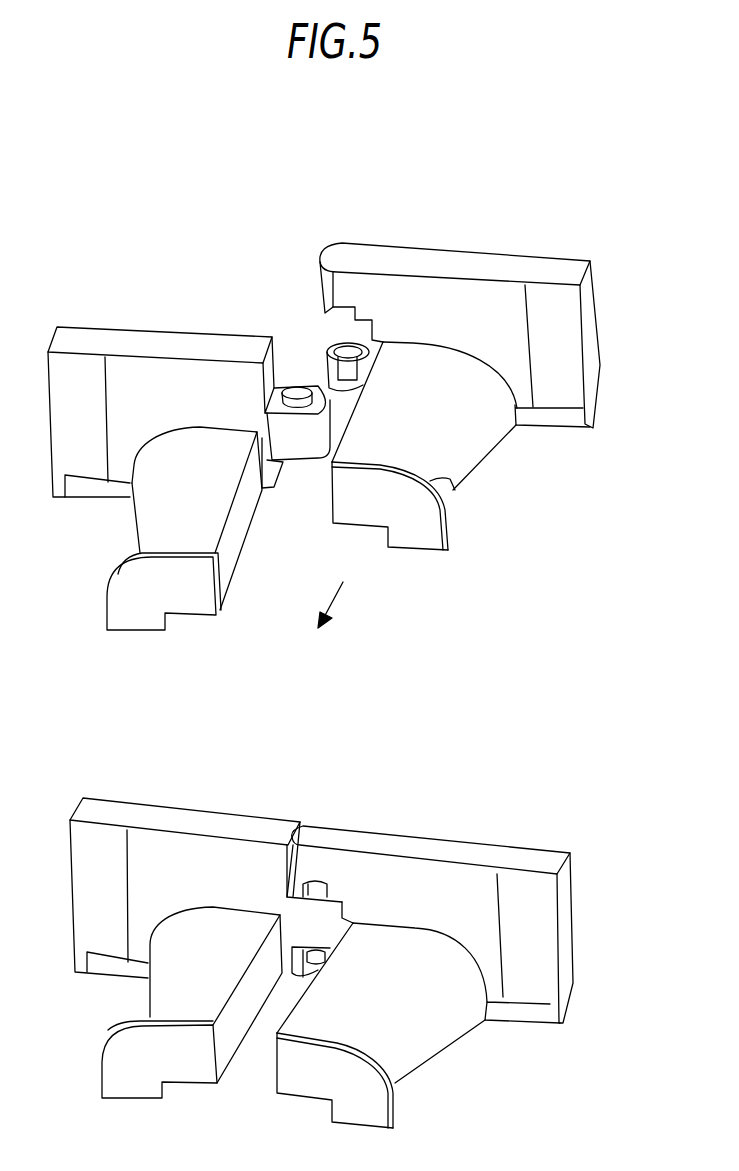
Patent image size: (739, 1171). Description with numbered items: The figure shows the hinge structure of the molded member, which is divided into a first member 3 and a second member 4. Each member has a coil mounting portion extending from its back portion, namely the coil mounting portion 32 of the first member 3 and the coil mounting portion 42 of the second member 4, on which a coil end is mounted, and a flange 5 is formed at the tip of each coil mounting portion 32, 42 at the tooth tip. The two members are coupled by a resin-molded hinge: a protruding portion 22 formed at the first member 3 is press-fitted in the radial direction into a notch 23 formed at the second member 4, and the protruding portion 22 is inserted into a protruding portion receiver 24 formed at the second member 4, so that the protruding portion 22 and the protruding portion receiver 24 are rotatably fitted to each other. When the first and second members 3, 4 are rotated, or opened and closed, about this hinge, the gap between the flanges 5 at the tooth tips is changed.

The first member 3 is at (75, 337).
The second member 4 is at (500, 263).
The flange 5 is at (112, 571).
The protruding portion 22 is at (296, 389).
The notch 23 is at (340, 364).
The protruding portion receiver 24 is at (352, 350).
The coil mounting portion 32 is at (130, 518).
The coil mounting portion 42 is at (487, 447).